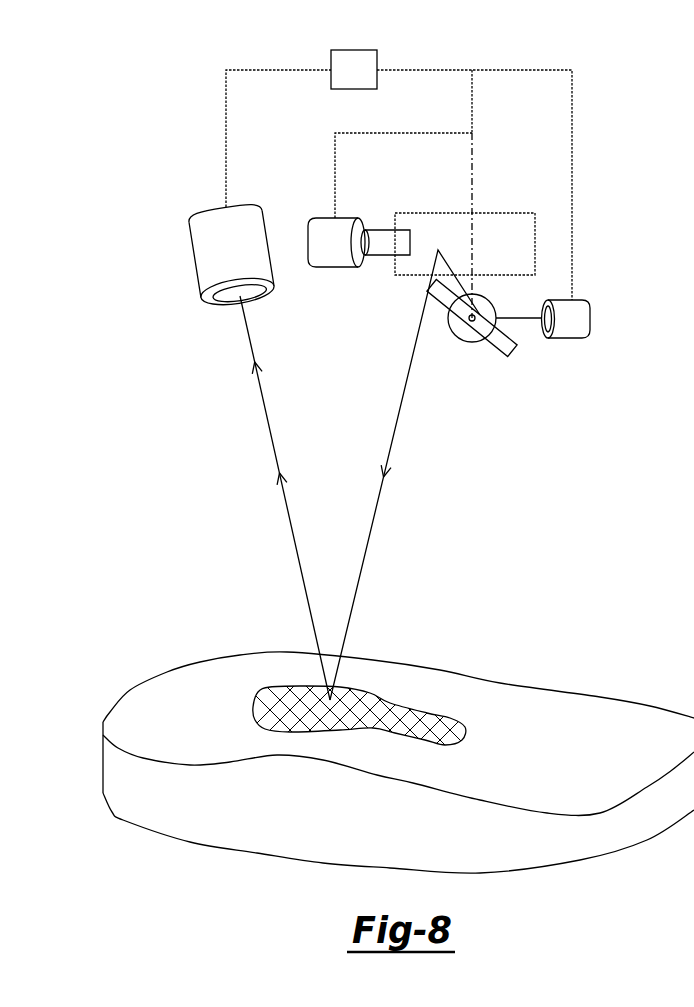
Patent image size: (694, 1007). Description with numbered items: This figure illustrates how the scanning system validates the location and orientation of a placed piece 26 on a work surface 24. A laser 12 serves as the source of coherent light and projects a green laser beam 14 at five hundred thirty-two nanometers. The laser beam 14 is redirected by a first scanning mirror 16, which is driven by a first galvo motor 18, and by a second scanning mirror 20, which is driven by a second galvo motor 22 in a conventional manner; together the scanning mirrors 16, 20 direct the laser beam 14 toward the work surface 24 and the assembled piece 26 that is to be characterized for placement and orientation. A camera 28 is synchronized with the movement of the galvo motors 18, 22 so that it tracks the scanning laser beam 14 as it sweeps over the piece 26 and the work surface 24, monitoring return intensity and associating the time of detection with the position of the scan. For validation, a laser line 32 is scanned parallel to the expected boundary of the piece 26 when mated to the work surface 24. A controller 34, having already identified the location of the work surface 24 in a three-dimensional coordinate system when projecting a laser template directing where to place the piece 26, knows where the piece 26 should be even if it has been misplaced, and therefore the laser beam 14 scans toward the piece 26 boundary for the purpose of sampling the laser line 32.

The laser 12 is at (571, 339).
The laser beam 14 is at (386, 479).
The first scanning mirror 16 is at (503, 353).
The first galvo motor 18 is at (448, 336).
The second scanning mirror 20 is at (514, 213).
The second galvo motor 22 is at (330, 222).
The work surface 24 is at (565, 730).
The piece 26 is at (273, 702).
The camera 28 is at (238, 256).
The laser line 32 is at (270, 440).
The controller 34 is at (361, 81).